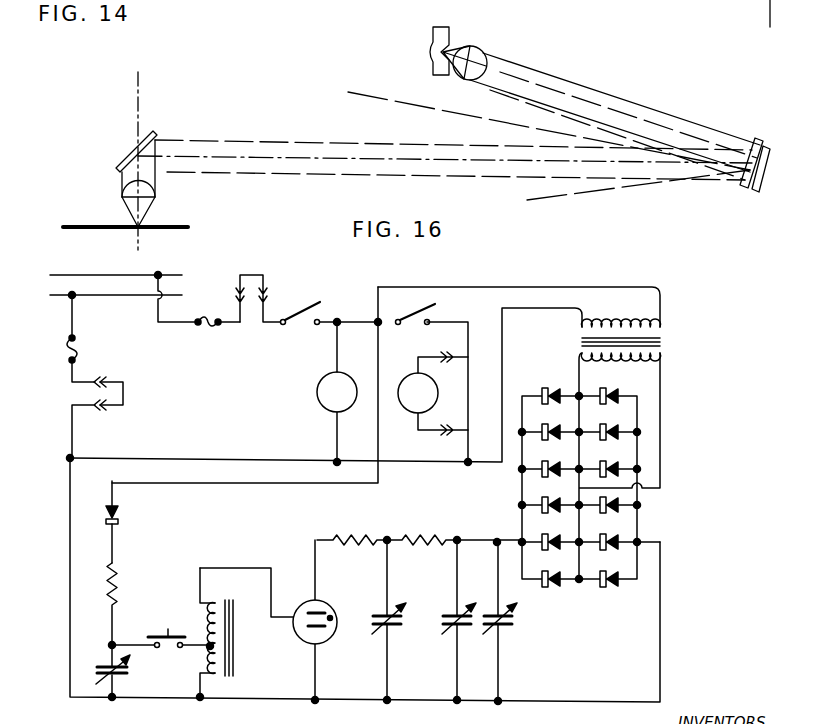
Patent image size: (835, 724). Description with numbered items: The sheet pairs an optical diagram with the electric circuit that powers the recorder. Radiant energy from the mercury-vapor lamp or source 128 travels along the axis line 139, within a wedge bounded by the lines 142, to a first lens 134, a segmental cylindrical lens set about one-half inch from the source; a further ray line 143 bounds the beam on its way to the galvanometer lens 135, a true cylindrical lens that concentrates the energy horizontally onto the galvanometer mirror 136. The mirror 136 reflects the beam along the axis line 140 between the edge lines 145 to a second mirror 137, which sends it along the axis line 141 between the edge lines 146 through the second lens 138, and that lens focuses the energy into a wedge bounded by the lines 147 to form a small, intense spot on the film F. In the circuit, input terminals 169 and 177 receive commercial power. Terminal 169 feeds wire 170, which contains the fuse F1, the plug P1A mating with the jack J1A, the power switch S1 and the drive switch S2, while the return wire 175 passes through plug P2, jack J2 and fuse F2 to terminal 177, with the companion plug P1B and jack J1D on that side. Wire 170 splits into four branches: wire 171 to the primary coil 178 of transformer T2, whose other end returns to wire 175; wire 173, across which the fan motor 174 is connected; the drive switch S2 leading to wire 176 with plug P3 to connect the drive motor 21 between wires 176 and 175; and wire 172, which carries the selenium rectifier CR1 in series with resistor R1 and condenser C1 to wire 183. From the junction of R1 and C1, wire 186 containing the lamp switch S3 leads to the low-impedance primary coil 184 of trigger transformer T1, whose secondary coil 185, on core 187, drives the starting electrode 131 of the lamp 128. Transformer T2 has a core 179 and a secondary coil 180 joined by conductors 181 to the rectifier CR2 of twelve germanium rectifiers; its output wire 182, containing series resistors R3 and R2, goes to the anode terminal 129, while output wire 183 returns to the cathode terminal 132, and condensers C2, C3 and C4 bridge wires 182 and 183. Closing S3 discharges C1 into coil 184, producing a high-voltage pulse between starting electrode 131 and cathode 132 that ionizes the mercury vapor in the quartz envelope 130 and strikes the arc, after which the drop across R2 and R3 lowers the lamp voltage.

In FIG. 14, the lamp 128 is at (433, 42).
In FIG. 16, the lamp 128 is at (302, 643).
In FIG. 14, the first lens 134 is at (478, 52).
In FIG. 14, the galvanometer lens 135 is at (757, 138).
In FIG. 14, the galvanometer mirror 136 is at (768, 160).
In FIG. 14, the second mirror 137 is at (126, 157).
In FIG. 14, the second lens 138 is at (128, 188).
In FIG. 14, the axis line 139 is at (565, 90).
In FIG. 14, the axis line 140 is at (323, 158).
In FIG. 14, the axis line 141 is at (138, 240).
In FIG. 14, the wedge edge lines 142 is at (460, 42).
In FIG. 14, the light beam edge 143 is at (633, 103).
In FIG. 14, the beam edge lines 145 is at (233, 140).
In FIG. 14, the beam edge lines 146 is at (120, 176).
In FIG. 14, the wedge edge lines 147 is at (150, 205).
In FIG. 14, the film F is at (55, 214).
In FIG. 16, the input terminal 169 is at (159, 273).
In FIG. 16, the wire 170 is at (175, 323).
In FIG. 16, the wire 171 is at (482, 287).
In FIG. 16, the wire 172 is at (378, 360).
In FIG. 16, the wire 173 is at (335, 360).
In FIG. 16, the fan motor 174 is at (316, 392).
In FIG. 16, the wire 175 is at (70, 426).
In FIG. 16, the wire 176 is at (449, 322).
In FIG. 16, the input terminal 177 is at (68, 298).
In FIG. 16, the primary coil 178 is at (620, 330).
In FIG. 16, the core 179 is at (663, 350).
In FIG. 16, the secondary coil 180 is at (628, 352).
In FIG. 16, the conductors 181 is at (578, 370).
In FIG. 16, the output wire 182 is at (482, 540).
In FIG. 16, the output wire 183 is at (70, 525).
In FIG. 16, the primary coil 184 is at (212, 678).
In FIG. 16, the secondary coil 185 is at (211, 618).
In FIG. 16, the wire 186 is at (130, 644).
In FIG. 16, the transformer core 187 is at (234, 641).
In FIG. 16, the drive motor 21 is at (412, 374).
In FIG. 16, the lower contact 129 is at (326, 604).
In FIG. 16, the quartz envelope 130 is at (334, 616).
In FIG. 16, the starting electrode 131 is at (292, 612).
In FIG. 16, the upper contact 132 is at (325, 642).
In FIG. 16, the plug P1A is at (252, 274).
In FIG. 16, the jack J1A is at (270, 297).
In FIG. 16, the power switch S1 is at (301, 326).
In FIG. 16, the drive switch S2 is at (418, 310).
In FIG. 16, the lamp switch S3 is at (161, 626).
In FIG. 16, the fuse F1 is at (208, 325).
In FIG. 16, the fuse F2 is at (68, 347).
In FIG. 16, the plug P3 is at (150, 312).
In FIG. 16, the jack J1D is at (80, 398).
In FIG. 16, the plug P1B is at (124, 397).
In FIG. 16, the plug P2 is at (447, 362).
In FIG. 16, the jack J2 is at (447, 425).
In FIG. 16, the trigger transformer T1 is at (213, 563).
In FIG. 16, the transformer T2 is at (665, 342).
In FIG. 16, the selenium rectifier CR1 is at (124, 520).
In FIG. 16, the rectifier CR2 is at (594, 594).
In FIG. 16, the resistor R1 is at (119, 584).
In FIG. 16, the series resistor R2 is at (355, 535).
In FIG. 16, the series resistor R3 is at (426, 535).
In FIG. 16, the condenser C1 is at (129, 670).
In FIG. 16, the condenser C2 is at (402, 622).
In FIG. 16, the condenser C3 is at (446, 626).
In FIG. 16, the condenser C4 is at (505, 628).